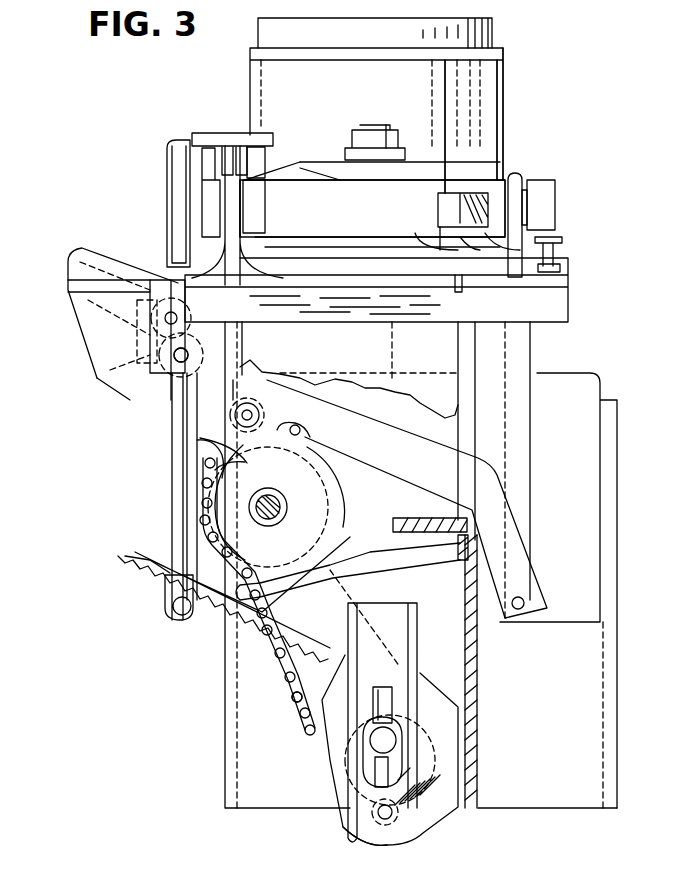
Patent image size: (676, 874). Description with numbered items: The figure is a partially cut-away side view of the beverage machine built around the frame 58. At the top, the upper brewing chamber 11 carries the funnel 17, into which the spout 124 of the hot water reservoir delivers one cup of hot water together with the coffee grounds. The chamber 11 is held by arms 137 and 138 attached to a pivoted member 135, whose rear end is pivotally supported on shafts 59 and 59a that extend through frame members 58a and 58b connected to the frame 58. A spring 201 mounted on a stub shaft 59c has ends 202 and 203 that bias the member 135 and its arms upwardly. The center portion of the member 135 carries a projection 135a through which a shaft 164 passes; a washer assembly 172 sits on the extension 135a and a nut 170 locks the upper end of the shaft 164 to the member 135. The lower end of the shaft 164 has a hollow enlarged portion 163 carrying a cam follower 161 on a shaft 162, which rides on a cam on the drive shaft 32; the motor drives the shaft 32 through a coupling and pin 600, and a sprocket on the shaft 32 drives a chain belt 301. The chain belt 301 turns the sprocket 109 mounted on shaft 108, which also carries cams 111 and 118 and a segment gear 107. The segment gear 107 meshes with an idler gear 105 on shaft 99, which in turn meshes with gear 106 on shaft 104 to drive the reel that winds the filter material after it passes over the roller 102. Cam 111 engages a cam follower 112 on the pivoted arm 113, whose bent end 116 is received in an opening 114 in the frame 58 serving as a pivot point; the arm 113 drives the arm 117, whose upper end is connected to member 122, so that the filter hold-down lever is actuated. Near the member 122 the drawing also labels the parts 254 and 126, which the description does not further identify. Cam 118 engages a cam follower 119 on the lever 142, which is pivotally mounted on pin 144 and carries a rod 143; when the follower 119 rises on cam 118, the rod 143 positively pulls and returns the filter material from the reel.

The funnel 17 is at (483, 33).
The upper brewing chamber 11 is at (472, 93).
The stub shaft 59c is at (463, 152).
The nut 170 is at (352, 143).
The washer assembly 172 is at (386, 145).
The member 135 is at (440, 190).
The projection 135a is at (326, 176).
The member 122 is at (195, 133).
The clamp fingers 254 is at (232, 147).
The clamp block 126 is at (262, 165).
The spout 124 is at (205, 182).
The arm 137 is at (205, 222).
The shaft 59 is at (247, 216).
The frame member 58a is at (234, 238).
The spring 201 is at (458, 205).
The spring end 202 is at (438, 247).
The arm 138 is at (522, 182).
The shaft 59a is at (540, 200).
The frame member 58b is at (527, 223).
The frame 58 is at (555, 305).
The spring end 203 is at (460, 292).
The roller 102 is at (82, 252).
The shaft 104 is at (157, 320).
The gear 106 is at (157, 358).
The idler gear 105 is at (150, 380).
The shaft 99 is at (190, 353).
The shaft 164 is at (385, 351).
The cam follower 119 is at (232, 412).
The cam 118 is at (220, 445).
The arm 117 is at (178, 448).
The cam 111 is at (256, 505).
The shaft 108 is at (240, 497).
The segment gear 107 is at (235, 545).
The sprocket 109 is at (245, 548).
The cam follower 112 is at (132, 568).
The arm 113 is at (166, 614).
The pin 144 is at (301, 430).
The lever 142 is at (500, 492).
The opening 114 is at (483, 540).
The end 116 is at (490, 563).
The rod 143 is at (526, 606).
The hollow enlarged portion 163 is at (430, 700).
The chain belt 301 is at (295, 700).
The drive shaft 32 is at (388, 740).
The pin 600 is at (385, 776).
The cam follower 161 is at (360, 827).
The shaft 162 is at (392, 812).